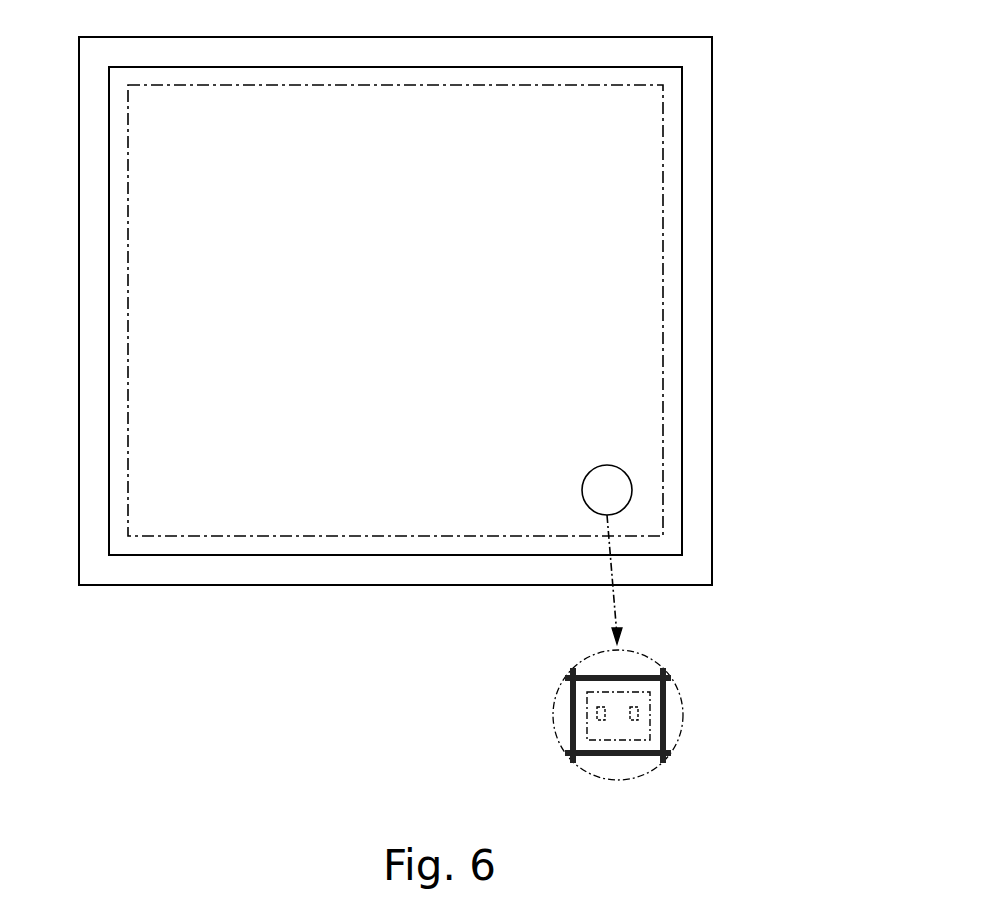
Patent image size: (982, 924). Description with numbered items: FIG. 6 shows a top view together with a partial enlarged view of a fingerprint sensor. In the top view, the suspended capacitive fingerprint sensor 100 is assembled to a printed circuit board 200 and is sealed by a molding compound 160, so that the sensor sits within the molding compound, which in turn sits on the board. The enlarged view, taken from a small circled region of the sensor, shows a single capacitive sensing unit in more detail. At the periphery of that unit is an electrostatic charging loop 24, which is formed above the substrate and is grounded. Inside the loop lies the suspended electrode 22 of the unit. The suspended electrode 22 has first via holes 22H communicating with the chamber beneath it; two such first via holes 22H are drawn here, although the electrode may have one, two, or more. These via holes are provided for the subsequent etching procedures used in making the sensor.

The suspended capacitive fingerprint sensor 100 is at (664, 158).
The printed circuit board 200 is at (713, 240).
The molding compound 160 is at (682, 340).
The electrostatic charging loop 24 is at (662, 690).
The suspended electrode 22 is at (651, 717).
The first via hole 22H is at (597, 712).